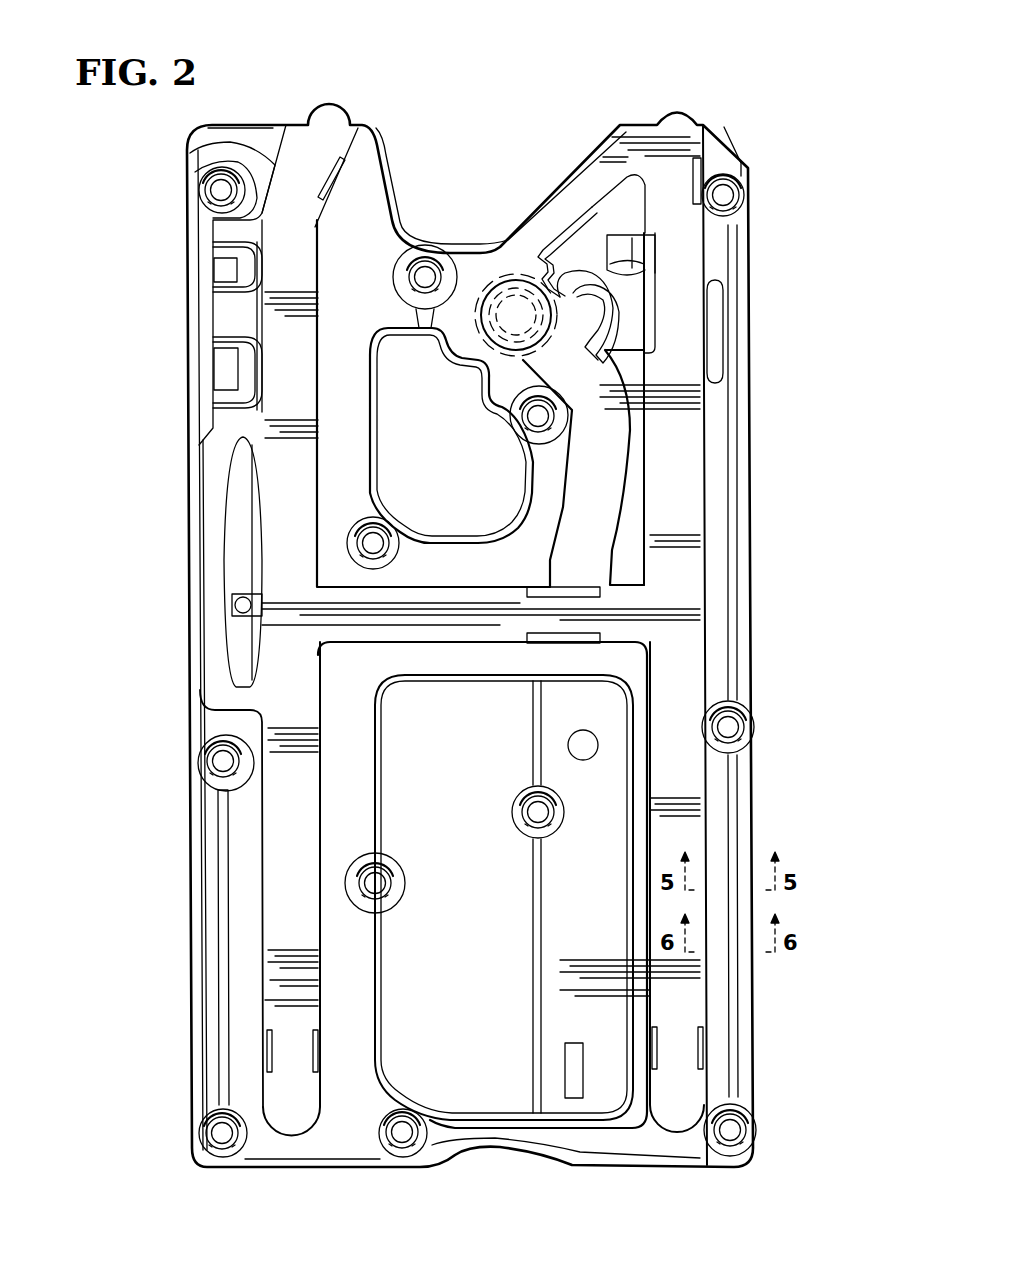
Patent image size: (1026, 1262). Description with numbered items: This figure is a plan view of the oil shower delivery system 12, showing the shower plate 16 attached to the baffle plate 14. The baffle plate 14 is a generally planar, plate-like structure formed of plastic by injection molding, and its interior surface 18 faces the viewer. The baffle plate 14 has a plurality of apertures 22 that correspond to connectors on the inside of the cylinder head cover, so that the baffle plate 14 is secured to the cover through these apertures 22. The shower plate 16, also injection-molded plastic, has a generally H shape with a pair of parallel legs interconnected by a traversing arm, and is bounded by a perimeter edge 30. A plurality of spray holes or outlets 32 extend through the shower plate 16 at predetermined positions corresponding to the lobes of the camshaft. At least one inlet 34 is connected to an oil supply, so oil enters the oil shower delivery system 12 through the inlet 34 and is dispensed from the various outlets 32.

The oil shower delivery system 12 is at (93, 266).
The baffle plate 14 is at (717, 152).
The shower plate 16 is at (346, 133).
The interior surface 18 is at (458, 431).
The apertures 22 is at (205, 195).
The perimeter edge 30 is at (250, 148).
The outlets 32 is at (316, 157).
The inlet 34 is at (514, 312).